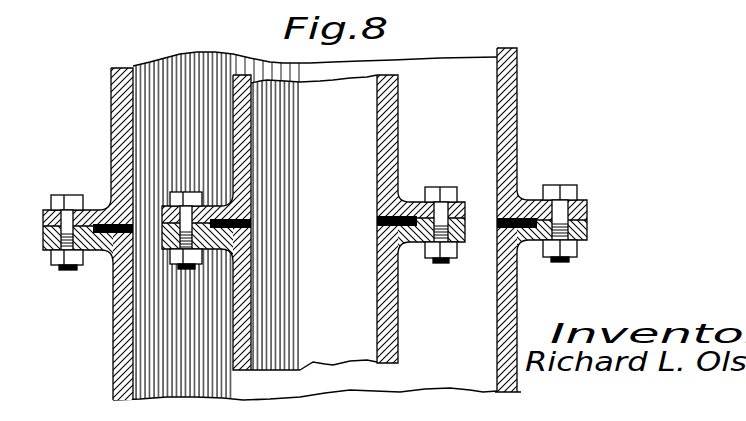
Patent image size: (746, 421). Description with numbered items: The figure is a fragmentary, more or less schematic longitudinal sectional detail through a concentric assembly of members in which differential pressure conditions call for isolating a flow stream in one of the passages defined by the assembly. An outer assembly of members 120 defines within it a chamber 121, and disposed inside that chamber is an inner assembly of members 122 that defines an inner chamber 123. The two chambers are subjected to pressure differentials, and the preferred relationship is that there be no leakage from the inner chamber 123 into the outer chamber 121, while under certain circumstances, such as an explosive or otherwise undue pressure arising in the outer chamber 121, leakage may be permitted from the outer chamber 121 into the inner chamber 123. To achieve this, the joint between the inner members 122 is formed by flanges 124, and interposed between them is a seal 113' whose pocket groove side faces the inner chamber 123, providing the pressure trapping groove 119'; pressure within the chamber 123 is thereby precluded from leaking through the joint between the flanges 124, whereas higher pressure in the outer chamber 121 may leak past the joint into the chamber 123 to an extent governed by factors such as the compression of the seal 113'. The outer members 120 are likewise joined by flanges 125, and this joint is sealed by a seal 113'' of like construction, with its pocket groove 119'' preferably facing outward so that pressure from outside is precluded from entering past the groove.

The seal 113' is at (406, 233).
The seal 113'' is at (537, 238).
The pressure trapping groove 119' is at (372, 238).
The pocket groove 119'' is at (77, 242).
The assembly of members 120 is at (512, 137).
The chamber 121 is at (478, 102).
The assembly of members 122 is at (384, 160).
The chamber 123 is at (350, 127).
The flanges 124 is at (465, 221).
The flanges 125 is at (588, 227).